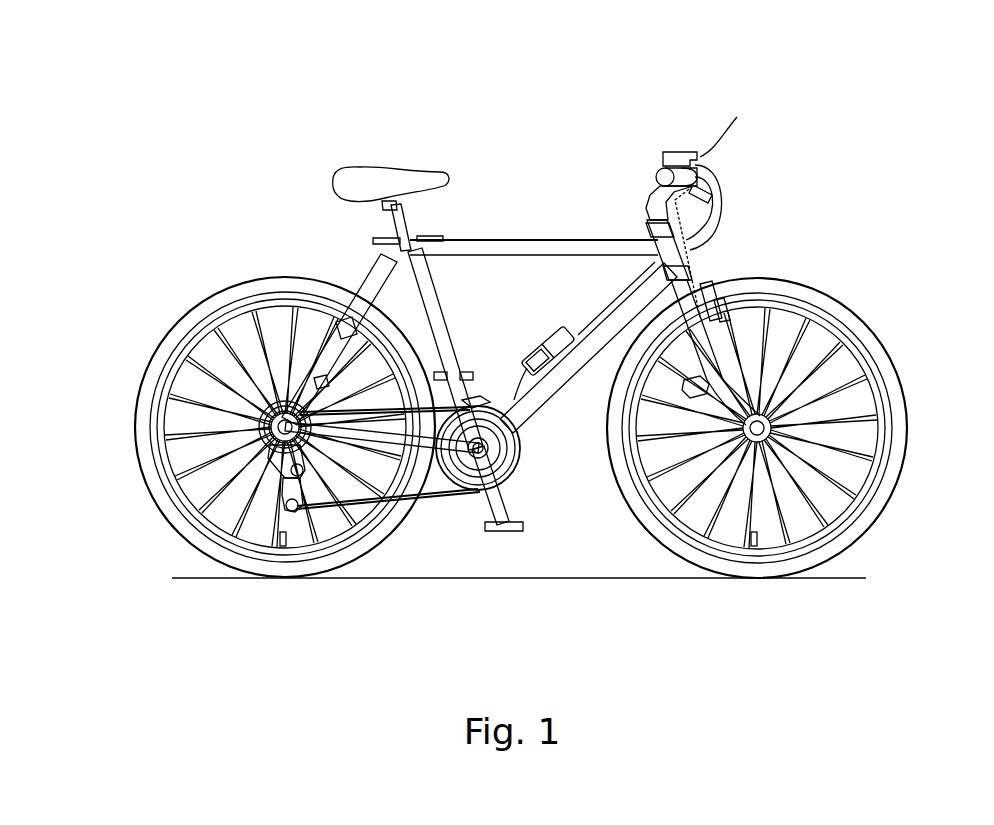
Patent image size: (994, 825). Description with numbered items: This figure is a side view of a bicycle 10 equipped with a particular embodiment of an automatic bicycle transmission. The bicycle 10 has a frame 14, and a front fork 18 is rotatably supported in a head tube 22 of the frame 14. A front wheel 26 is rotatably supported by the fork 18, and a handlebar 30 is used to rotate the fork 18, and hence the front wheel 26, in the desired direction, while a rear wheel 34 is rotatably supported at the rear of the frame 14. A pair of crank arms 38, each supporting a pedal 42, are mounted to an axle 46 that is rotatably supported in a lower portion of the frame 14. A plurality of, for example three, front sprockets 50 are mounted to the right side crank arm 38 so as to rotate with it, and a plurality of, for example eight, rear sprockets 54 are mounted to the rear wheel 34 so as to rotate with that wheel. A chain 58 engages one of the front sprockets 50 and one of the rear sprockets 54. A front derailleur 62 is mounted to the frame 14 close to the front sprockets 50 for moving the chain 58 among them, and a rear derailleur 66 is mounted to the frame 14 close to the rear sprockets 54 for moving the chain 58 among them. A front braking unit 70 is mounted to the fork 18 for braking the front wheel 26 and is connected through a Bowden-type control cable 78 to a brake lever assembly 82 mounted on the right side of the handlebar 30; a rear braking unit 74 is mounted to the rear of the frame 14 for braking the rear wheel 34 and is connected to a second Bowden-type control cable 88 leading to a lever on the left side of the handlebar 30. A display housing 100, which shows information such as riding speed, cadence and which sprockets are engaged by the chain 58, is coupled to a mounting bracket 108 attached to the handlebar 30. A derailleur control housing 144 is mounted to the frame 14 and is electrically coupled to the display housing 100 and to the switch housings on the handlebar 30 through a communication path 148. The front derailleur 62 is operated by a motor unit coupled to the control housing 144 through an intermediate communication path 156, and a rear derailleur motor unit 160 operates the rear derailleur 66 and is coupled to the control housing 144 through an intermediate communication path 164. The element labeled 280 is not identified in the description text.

The bicycle 10 is at (375, 85).
The frame 14 is at (523, 250).
The front fork 18 is at (700, 292).
The head tube 22 is at (658, 240).
The front wheel 26 is at (863, 323).
The handlebar 30 is at (657, 175).
The rear wheel 34 is at (163, 343).
The crank arm 38 is at (491, 497).
The pedal 42 is at (523, 528).
The axle 46 is at (488, 453).
The front sprockets 50 is at (519, 443).
The rear sprockets 54 is at (263, 419).
The chain 58 is at (433, 502).
The front derailleur 62 is at (474, 403).
The rear derailleur 66 is at (270, 463).
The front braking unit 70 is at (718, 307).
The rear braking unit 74 is at (338, 318).
The Bowden-type control cable 78 is at (697, 290).
The brake lever assembly 82 is at (717, 187).
The Bowden-type control cable 88 is at (375, 277).
The display housing 100 is at (682, 150).
The mounting bracket 108 is at (735, 123).
The derailleur control housing 144 is at (548, 340).
The communication path 148 is at (604, 316).
The intermediate communication path 156 is at (525, 398).
The rear derailleur motor unit 160 is at (240, 528).
The intermediate communication path 164 is at (322, 383).
The housing 280 is at (547, 367).